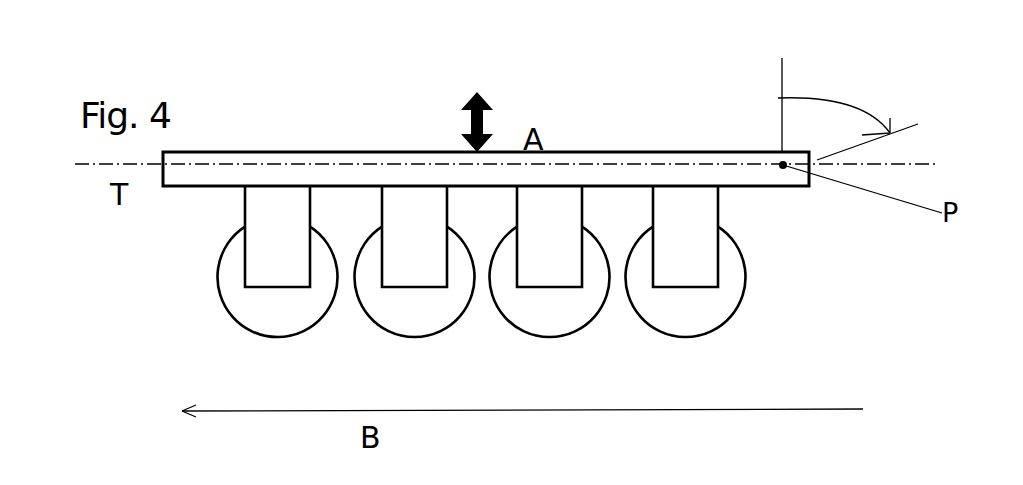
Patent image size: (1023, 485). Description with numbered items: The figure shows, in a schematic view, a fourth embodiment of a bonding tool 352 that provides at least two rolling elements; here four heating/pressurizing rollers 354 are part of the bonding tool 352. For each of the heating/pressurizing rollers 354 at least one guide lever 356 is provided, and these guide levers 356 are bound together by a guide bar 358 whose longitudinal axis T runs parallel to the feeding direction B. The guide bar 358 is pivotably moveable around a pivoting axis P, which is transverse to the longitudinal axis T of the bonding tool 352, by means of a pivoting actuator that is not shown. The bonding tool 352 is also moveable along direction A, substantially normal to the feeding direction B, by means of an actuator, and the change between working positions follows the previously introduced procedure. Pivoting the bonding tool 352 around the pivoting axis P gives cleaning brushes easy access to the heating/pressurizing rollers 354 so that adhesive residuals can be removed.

The bonding tool 352 is at (303, 114).
The heating/pressurizing rollers 354 is at (502, 315).
The guide lever 356 is at (707, 217).
The guide bar 358 is at (627, 162).